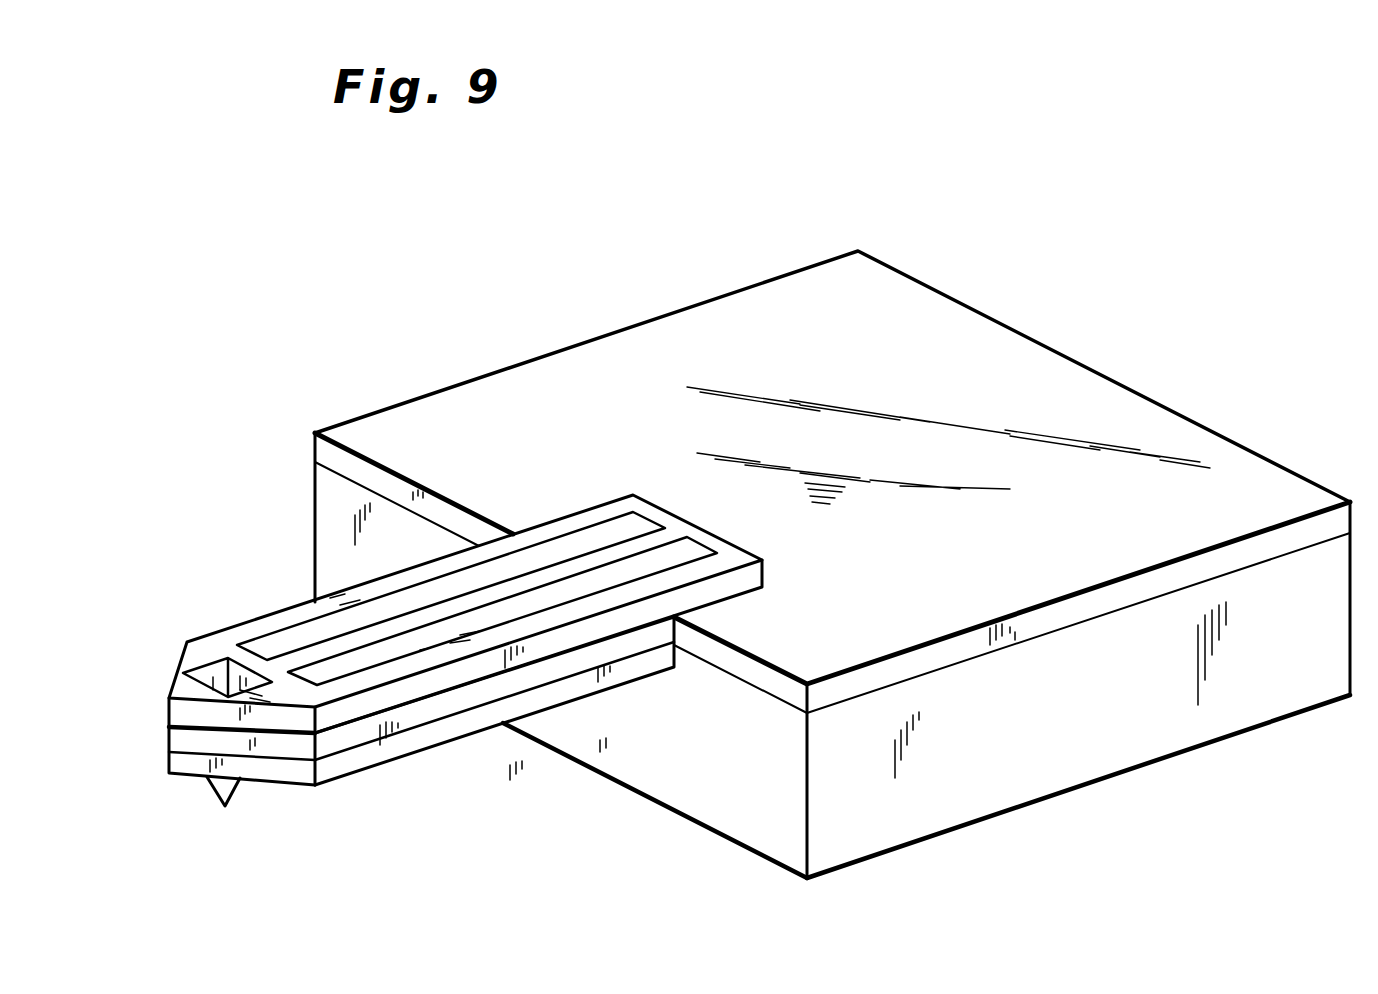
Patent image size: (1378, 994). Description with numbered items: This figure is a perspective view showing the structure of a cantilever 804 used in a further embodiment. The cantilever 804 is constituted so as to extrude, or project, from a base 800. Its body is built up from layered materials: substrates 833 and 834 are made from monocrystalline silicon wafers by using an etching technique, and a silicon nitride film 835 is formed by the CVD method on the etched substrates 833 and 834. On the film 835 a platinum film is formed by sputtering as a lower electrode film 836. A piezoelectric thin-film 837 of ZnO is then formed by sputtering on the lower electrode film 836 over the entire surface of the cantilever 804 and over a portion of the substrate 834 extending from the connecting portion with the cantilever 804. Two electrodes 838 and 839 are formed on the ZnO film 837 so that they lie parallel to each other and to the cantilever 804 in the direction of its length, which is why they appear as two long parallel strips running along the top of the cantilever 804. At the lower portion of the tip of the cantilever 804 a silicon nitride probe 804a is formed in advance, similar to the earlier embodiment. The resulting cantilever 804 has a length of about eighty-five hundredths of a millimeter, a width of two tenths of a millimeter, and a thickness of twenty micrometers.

The base 800 is at (268, 410).
The cantilever 804 is at (167, 642).
The silicon nitride probe 804a is at (210, 788).
The substrate 833 is at (498, 712).
The substrate 834 is at (1162, 735).
The silicon nitride film 835 is at (748, 665).
The lower electrode film 836 is at (1018, 335).
The piezoelectric thin-film 837 is at (222, 638).
The electrode 838 is at (363, 667).
The electrode 839 is at (315, 627).